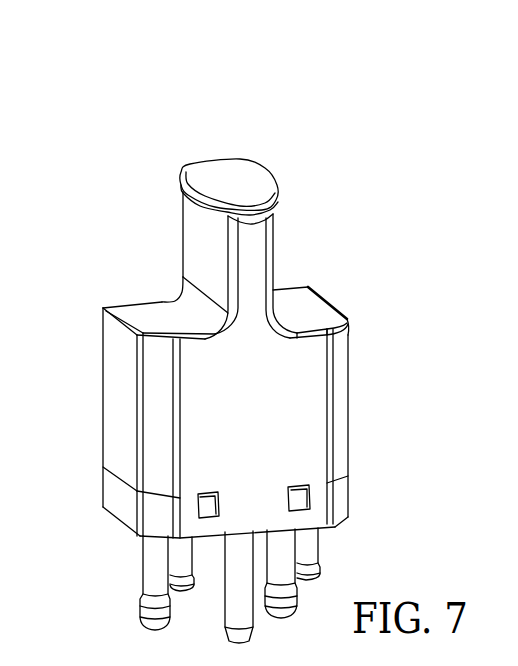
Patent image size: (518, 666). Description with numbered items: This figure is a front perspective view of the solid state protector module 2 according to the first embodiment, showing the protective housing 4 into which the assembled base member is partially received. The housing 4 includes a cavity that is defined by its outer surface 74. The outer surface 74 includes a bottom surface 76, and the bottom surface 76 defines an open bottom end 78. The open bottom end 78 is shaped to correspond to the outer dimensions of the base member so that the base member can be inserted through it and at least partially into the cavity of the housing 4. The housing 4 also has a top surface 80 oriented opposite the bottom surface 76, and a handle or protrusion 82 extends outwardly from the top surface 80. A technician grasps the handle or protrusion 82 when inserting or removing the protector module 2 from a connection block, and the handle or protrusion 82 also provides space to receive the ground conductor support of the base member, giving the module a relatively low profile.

The solid state protector module 2 is at (307, 128).
The protective housing 4 is at (303, 307).
The outer surface 74 is at (122, 478).
The bottom surface 76 is at (118, 514).
The open bottom end 78 is at (340, 522).
The top surface 80 is at (148, 317).
The handle or protrusion 82 is at (197, 148).